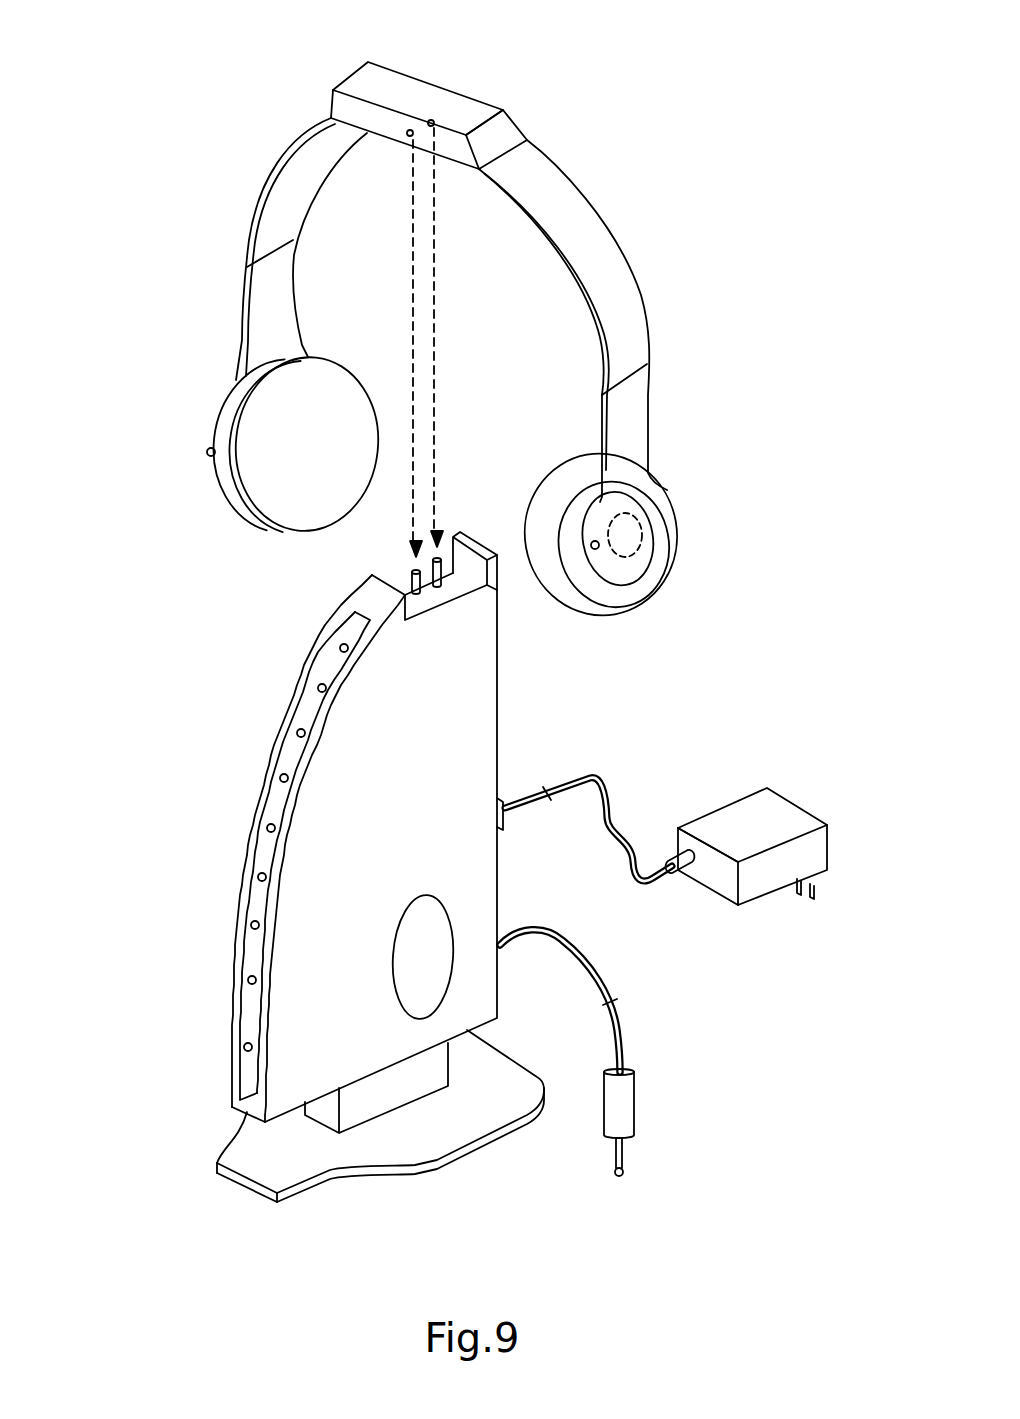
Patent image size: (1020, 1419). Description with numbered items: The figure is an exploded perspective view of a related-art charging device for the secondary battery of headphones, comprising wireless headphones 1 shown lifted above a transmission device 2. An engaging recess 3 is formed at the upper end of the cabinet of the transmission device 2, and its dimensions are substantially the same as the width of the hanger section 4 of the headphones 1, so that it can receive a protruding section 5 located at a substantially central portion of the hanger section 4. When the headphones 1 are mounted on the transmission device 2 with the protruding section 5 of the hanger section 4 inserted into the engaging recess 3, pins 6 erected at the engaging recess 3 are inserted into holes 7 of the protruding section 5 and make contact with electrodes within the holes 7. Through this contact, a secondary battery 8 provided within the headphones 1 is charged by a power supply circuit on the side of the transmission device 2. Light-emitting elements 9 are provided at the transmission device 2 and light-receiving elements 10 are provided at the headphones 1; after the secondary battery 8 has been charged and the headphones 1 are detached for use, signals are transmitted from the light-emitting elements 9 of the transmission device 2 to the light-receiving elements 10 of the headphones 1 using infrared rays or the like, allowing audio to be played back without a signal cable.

The wireless headphones 1 is at (585, 162).
The transmission device 2 is at (252, 741).
The engaging recess 3 is at (408, 588).
The hanger section 4 is at (615, 287).
The protruding section 5 is at (413, 96).
The pins 6 is at (440, 570).
The holes 7 is at (436, 121).
The secondary battery 8 is at (642, 527).
The light-emitting elements 9 is at (270, 828).
The light-receiving elements 10 is at (206, 453).